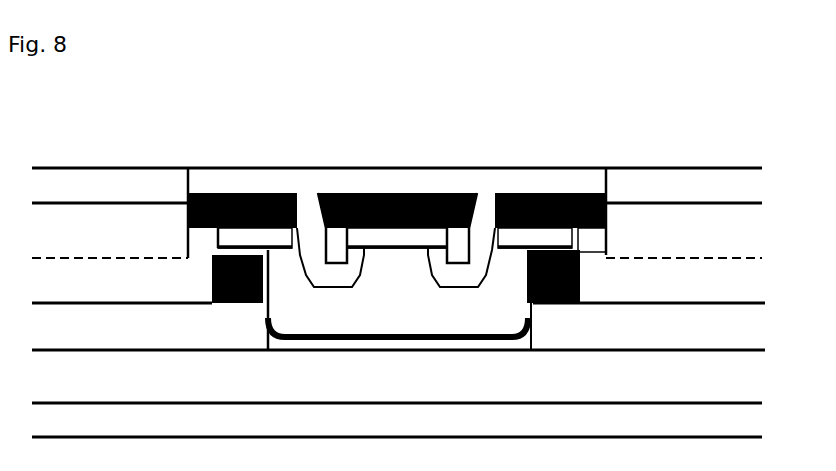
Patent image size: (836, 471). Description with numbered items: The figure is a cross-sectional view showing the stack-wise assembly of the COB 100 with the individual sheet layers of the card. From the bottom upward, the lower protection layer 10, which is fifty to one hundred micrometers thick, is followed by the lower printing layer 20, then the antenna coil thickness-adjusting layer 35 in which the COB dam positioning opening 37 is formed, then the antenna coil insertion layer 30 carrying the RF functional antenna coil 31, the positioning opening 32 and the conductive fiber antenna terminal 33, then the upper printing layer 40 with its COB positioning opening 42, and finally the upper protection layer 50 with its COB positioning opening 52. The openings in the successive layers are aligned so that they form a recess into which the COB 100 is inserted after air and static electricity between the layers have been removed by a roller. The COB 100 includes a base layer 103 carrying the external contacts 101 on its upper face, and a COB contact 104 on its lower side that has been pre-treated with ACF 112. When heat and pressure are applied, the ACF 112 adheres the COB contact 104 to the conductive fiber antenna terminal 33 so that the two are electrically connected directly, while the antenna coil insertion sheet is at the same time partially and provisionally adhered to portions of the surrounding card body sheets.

The lower protection layer 10 is at (748, 420).
The lower printing layer 20 is at (748, 375).
The antenna coil insertion layer 30 is at (748, 281).
The antenna coil 31 is at (88, 251).
The positioning opening 32 is at (583, 275).
The antenna terminal 33 is at (212, 280).
The thickness-adjusting layer 35 is at (748, 327).
The COB dam positioning opening 37 is at (539, 327).
The upper printing layer 40 is at (748, 232).
The COB positioning opening formed on upper printing layer 42 is at (615, 220).
The upper protection layer 50 is at (748, 190).
The COB positioning opening formed on upper protection layer 52 is at (615, 187).
The COB 100 is at (285, 152).
The external contacts of the COB 101 is at (513, 172).
The base layer of the COB 103 is at (188, 206).
The COB contact 104 is at (566, 240).
The ACF 112 is at (197, 238).